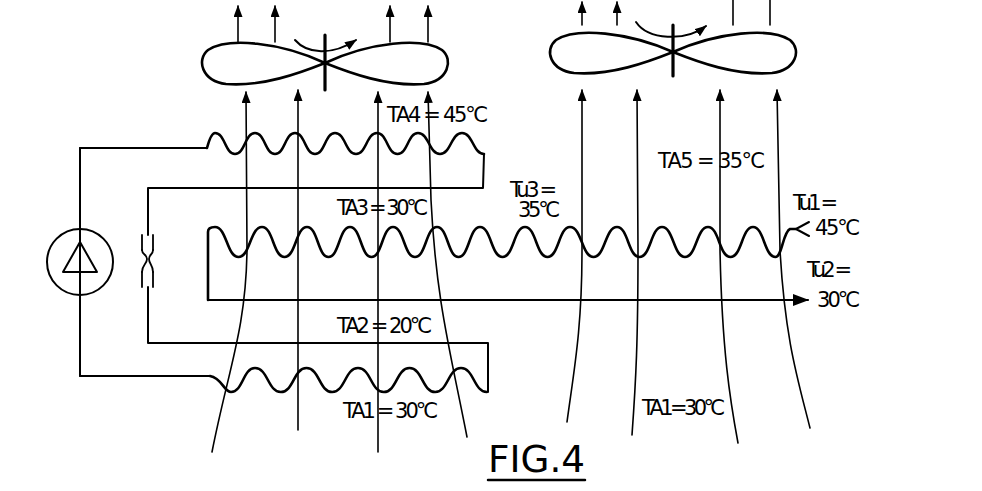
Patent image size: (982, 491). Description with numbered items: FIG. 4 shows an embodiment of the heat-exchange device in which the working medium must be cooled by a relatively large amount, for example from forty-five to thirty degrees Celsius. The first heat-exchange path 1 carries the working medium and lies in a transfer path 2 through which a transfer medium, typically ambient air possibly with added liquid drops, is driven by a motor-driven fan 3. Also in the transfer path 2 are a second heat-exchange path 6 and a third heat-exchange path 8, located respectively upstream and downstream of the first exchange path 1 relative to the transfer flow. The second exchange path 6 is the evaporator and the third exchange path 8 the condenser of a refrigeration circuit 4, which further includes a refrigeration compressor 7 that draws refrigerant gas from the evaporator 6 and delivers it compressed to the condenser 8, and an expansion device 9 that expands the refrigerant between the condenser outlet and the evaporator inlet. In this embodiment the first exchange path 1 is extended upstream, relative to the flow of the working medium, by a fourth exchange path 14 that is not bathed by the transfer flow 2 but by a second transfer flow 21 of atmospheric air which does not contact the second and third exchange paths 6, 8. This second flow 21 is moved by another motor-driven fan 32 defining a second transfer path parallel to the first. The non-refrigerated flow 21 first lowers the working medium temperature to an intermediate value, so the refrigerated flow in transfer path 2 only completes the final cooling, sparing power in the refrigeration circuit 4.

The first heat-exchange path 1 is at (456, 262).
The transfer path 2 is at (207, 441).
The motor-driven fan 3 is at (200, 72).
The refrigeration circuit 4 is at (117, 386).
The second heat-exchange path 6 is at (336, 394).
The refrigeration compressor 7 is at (62, 288).
The third heat-exchange path 8 is at (481, 140).
The expansion device 9 is at (156, 245).
The fourth exchange path 14 is at (677, 226).
The second transfer flow 21 is at (738, 431).
The motor-driven fan 32 is at (797, 48).